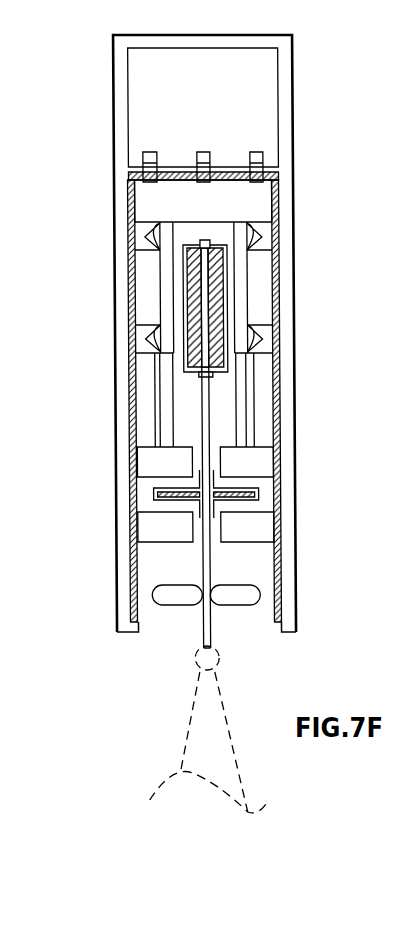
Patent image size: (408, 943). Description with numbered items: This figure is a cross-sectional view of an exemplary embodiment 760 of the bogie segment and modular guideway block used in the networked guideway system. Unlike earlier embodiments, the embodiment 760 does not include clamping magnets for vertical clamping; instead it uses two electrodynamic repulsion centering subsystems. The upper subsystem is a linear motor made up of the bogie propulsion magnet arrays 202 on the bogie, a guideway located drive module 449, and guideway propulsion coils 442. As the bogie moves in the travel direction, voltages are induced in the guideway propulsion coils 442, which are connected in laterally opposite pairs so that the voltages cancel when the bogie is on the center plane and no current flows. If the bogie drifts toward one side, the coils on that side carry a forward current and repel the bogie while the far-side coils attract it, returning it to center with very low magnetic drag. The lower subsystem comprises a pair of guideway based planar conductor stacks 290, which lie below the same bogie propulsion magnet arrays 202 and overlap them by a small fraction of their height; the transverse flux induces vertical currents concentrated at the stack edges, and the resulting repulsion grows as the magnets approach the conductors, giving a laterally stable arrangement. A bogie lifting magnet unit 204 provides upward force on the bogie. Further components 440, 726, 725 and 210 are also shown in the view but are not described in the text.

The bogie segment embodiment 760 is at (96, 100).
The guideway located drive module 449 is at (145, 206).
The left tube 440 is at (144, 270).
The guideway propulsion coils 442 is at (167, 307).
The bogie propulsion magnet arrays 202 is at (222, 287).
The guideway based planar conductor stacks 290 is at (247, 406).
The left guide blocks 726 is at (145, 465).
The right guide blocks 725 is at (253, 465).
The bogie lifting magnet unit 204 is at (258, 495).
The rollers 210 is at (205, 572).